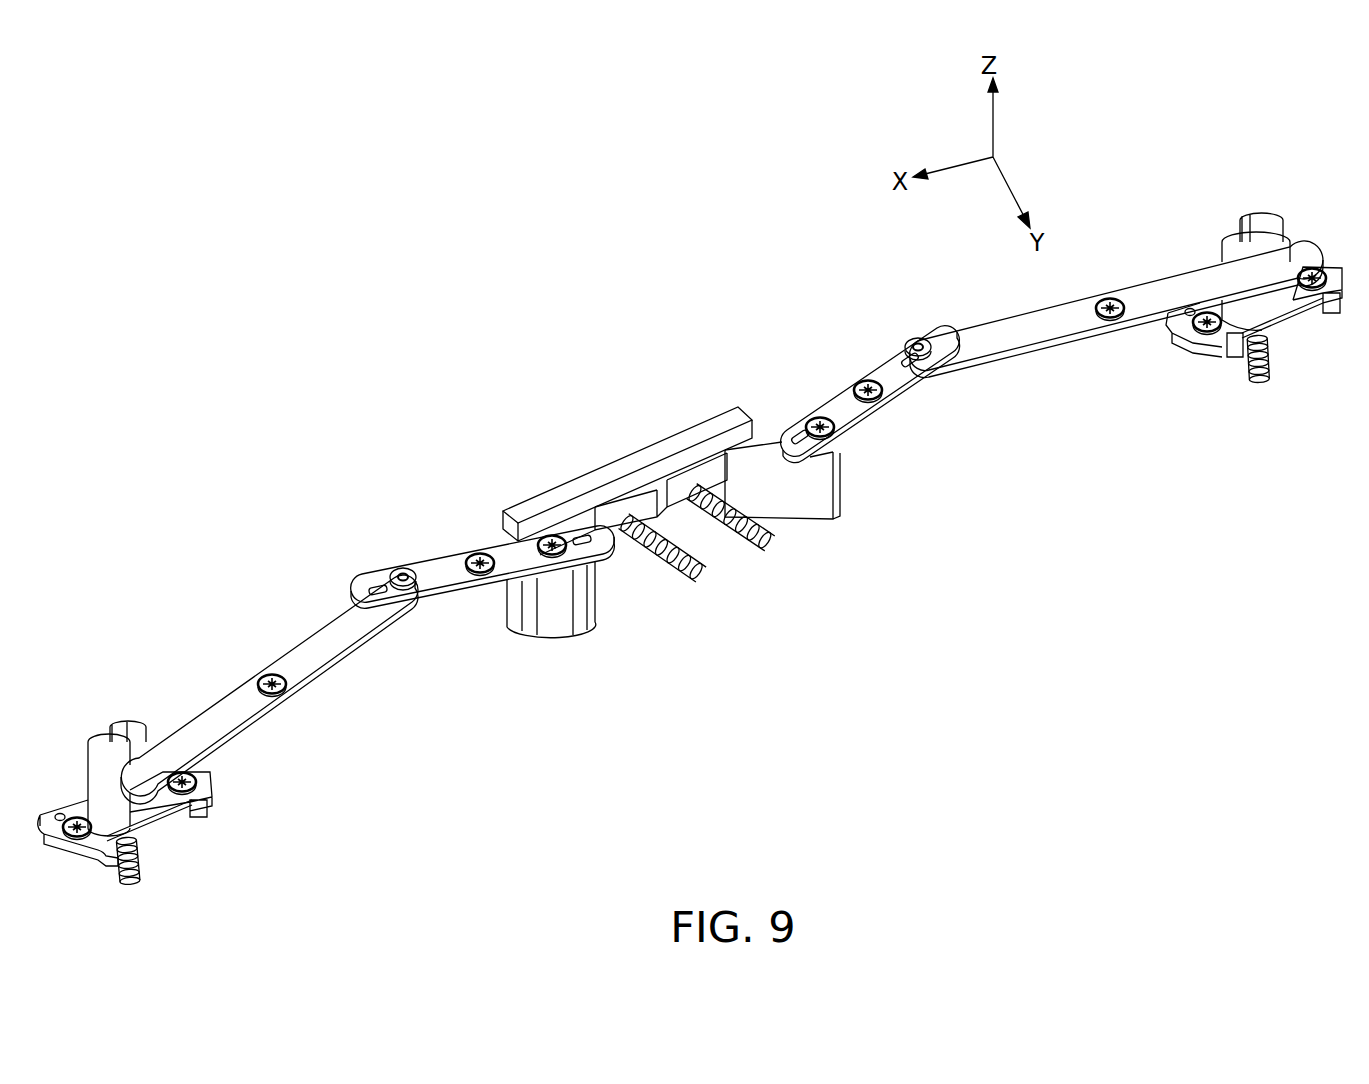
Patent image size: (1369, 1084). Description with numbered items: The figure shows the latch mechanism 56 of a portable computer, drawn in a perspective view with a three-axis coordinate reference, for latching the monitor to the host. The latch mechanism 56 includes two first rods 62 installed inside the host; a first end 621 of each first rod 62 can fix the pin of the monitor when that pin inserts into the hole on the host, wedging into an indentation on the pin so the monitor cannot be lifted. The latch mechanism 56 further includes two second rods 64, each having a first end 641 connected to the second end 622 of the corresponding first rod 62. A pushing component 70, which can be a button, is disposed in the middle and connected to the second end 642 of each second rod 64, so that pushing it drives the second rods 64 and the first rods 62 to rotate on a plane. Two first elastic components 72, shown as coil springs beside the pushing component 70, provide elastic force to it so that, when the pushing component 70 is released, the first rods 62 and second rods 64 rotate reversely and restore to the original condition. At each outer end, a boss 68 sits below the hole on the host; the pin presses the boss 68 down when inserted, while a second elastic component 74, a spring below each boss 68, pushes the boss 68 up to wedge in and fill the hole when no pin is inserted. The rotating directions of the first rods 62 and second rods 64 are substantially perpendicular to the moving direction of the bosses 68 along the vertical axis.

The latch mechanism 56 is at (328, 272).
The first rod 62 is at (478, 888).
The first end of the first rod 621 is at (140, 773).
The second end of the first rod 622 is at (407, 600).
The second rod 64 is at (438, 712).
The first end of the second rod 641 is at (398, 588).
The second end of the second rod 642 is at (600, 549).
The boss 68 is at (133, 725).
The pushing component 70 is at (619, 457).
The first elastic component 72 is at (701, 574).
The second elastic component 74 is at (133, 888).